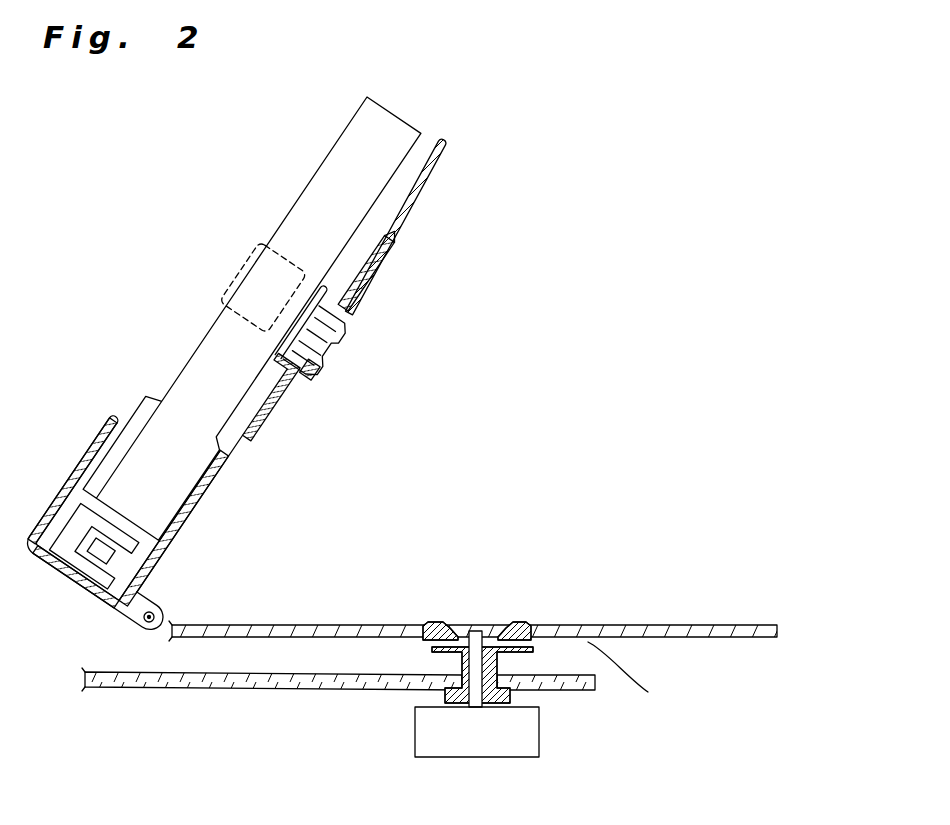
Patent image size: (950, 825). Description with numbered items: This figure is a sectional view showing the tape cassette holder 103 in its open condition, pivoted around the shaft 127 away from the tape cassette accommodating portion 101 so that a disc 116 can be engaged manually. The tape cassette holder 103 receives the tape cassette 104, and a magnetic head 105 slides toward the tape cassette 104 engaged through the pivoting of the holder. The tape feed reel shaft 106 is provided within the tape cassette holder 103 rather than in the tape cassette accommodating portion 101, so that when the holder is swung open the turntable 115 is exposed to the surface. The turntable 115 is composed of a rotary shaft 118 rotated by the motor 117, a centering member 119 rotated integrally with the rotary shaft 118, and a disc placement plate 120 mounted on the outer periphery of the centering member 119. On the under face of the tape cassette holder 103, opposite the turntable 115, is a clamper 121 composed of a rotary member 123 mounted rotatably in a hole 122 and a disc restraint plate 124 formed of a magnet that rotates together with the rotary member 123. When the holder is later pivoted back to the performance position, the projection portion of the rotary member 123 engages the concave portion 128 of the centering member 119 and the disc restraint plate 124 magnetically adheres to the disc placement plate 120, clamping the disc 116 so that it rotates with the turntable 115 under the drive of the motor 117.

The tape cassette accommodating portion 101 is at (200, 672).
The tape cassette holder 103 is at (433, 170).
The tape cassette 104 is at (312, 197).
The magnetic head 105 is at (100, 557).
The tape feed reel shaft 106 is at (235, 283).
The turntable 115 is at (523, 620).
The disc 116 is at (705, 627).
The motor 117 is at (525, 740).
The rotary shaft 118 is at (477, 631).
The centering member 119 is at (498, 623).
The disc placement plate 120 is at (647, 680).
The clamper 121 is at (378, 291).
The hole 122 is at (298, 370).
The rotary member 123 is at (350, 335).
The disc restraint plate 124 is at (390, 242).
The shaft 127 is at (330, 368).
The concave portion 128 is at (457, 625).